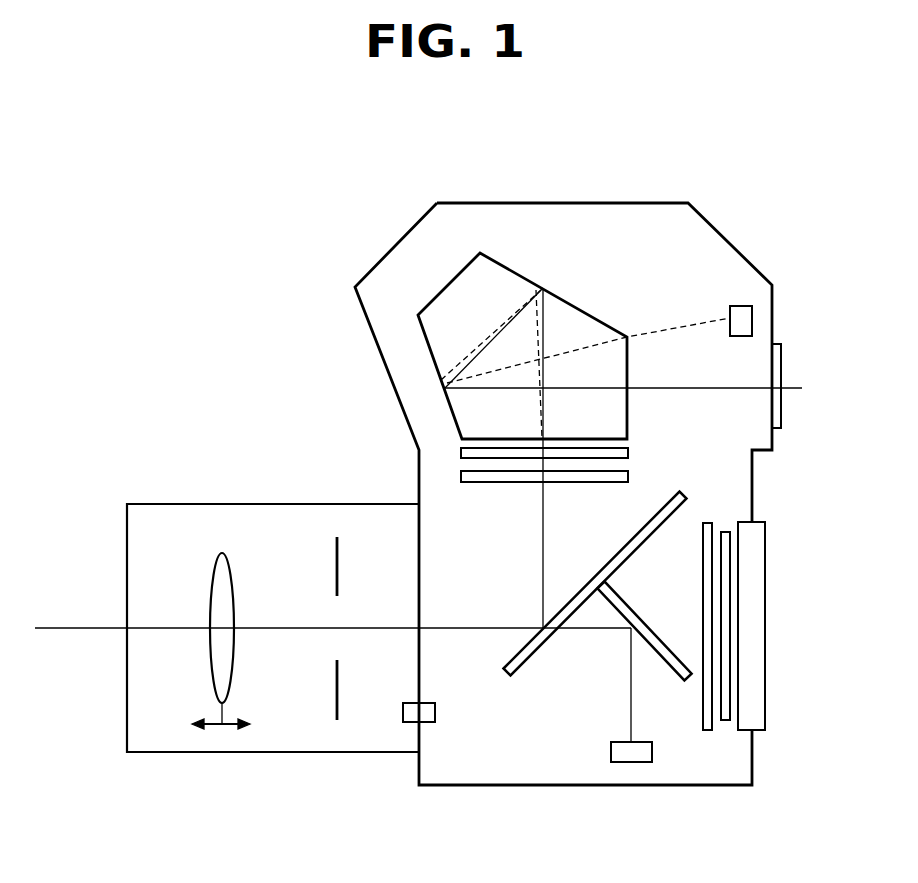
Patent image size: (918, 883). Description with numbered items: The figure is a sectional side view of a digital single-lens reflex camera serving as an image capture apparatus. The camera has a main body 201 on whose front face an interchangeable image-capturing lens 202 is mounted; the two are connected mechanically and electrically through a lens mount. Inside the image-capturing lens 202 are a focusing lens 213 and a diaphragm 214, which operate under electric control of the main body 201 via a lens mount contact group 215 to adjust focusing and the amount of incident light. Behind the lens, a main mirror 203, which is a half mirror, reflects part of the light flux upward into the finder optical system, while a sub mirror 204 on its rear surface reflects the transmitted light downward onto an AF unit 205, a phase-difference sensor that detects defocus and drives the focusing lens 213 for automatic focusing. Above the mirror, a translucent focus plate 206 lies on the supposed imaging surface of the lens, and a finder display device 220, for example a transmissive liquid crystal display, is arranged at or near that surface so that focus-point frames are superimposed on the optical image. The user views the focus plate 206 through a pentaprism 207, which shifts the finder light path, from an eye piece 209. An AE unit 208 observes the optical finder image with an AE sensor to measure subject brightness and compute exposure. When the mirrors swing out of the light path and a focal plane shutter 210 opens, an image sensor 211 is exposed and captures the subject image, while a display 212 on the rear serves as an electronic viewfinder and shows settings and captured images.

The main body 201 is at (468, 203).
The image-capturing lens 202 is at (279, 503).
The main mirror 203 is at (527, 659).
The sub mirror 204 is at (659, 636).
The AF unit 205 is at (612, 762).
The focus plate 206 is at (485, 483).
The pentaprism 207 is at (522, 277).
The AE unit 208 is at (740, 306).
The eye piece 209 is at (781, 350).
The focal plane shutter 210 is at (705, 730).
The image sensor 211 is at (725, 720).
The display 212 is at (766, 553).
The focusing lens 213 is at (196, 549).
The diaphragm 214 is at (335, 708).
The lens mount contact group 215 is at (413, 722).
The finder display device 220 is at (630, 451).